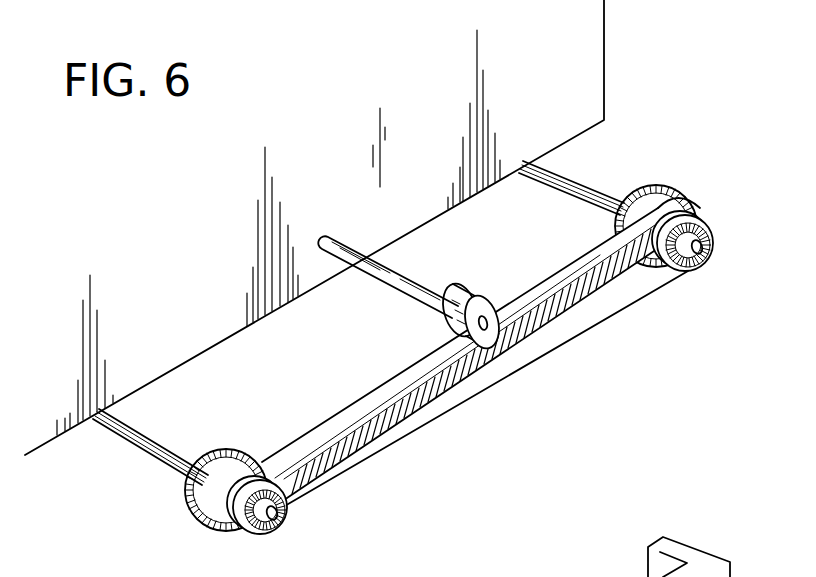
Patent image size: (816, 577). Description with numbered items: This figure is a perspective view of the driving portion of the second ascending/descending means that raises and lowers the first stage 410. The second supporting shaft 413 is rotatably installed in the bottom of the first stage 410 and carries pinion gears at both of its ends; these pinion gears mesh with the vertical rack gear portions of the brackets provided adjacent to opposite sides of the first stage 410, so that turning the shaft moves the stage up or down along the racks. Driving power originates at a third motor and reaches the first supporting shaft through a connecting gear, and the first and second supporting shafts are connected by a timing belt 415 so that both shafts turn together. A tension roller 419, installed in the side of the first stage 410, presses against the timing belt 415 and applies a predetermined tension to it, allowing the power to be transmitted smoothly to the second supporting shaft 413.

The first stage 410 is at (587, 110).
The second supporting shaft 413 is at (597, 179).
The timing belt 415 is at (423, 407).
The tension roller 419 is at (503, 357).